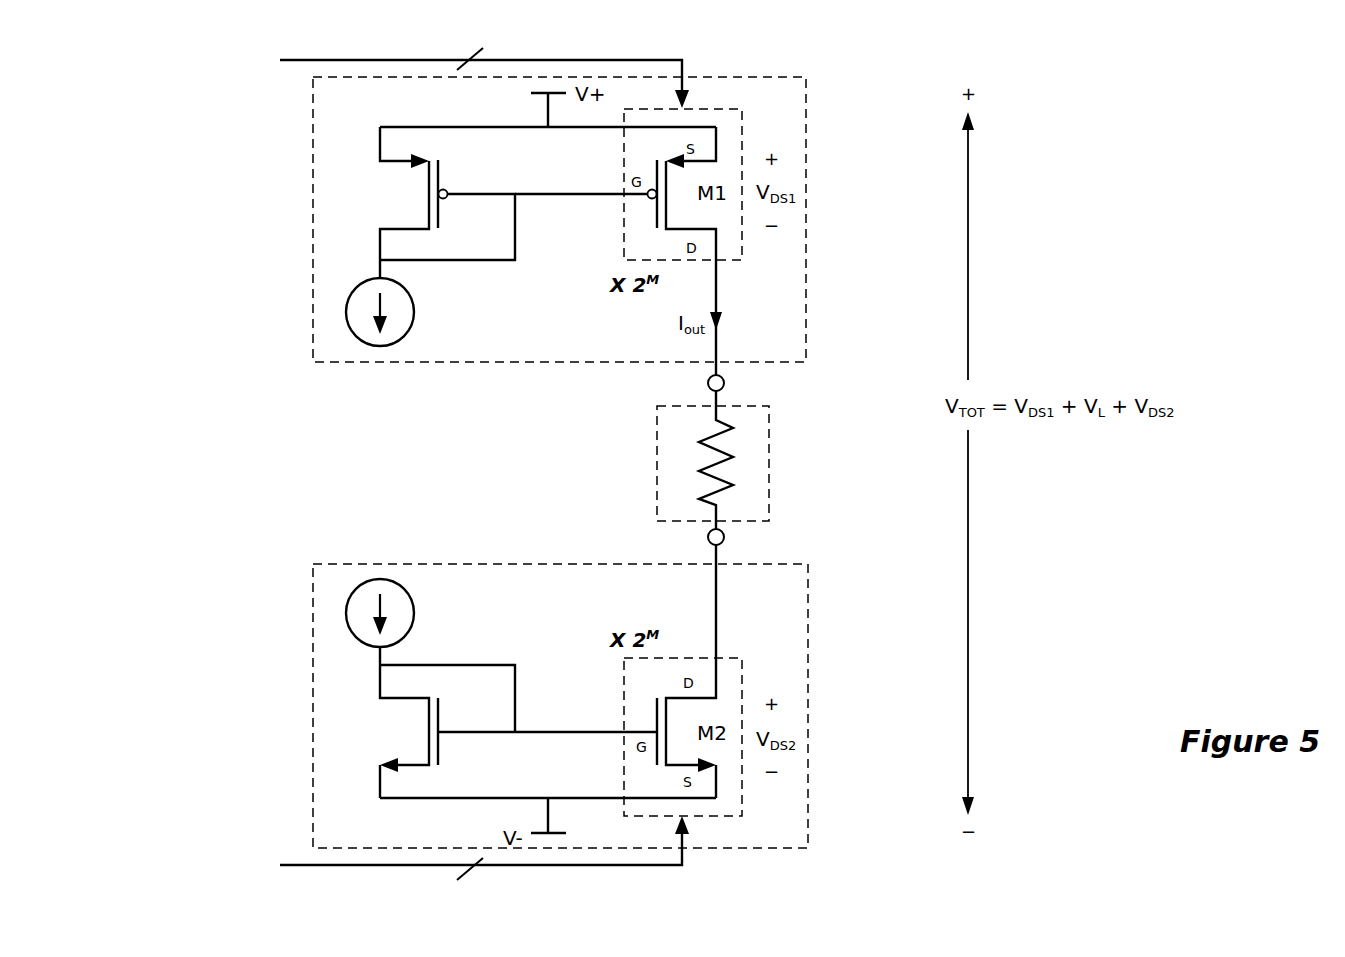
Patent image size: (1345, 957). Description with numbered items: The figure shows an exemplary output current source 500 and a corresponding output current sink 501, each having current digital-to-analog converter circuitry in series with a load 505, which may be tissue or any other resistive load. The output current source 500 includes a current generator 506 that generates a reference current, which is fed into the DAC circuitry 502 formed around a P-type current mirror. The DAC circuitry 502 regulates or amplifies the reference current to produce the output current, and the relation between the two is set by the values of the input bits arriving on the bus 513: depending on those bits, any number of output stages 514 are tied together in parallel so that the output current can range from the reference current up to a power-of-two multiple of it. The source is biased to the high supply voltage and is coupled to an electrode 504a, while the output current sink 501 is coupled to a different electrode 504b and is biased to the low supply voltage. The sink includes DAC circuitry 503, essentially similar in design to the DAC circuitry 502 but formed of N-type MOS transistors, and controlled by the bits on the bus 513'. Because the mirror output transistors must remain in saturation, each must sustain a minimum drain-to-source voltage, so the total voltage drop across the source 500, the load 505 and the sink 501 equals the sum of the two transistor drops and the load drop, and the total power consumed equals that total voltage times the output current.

The output current source 500 is at (816, 193).
The output current sink 501 is at (820, 715).
The DAC circuitry 502 is at (472, 108).
The DAC circuitry 503 is at (552, 604).
The electrode 504a is at (725, 388).
The electrode 504b is at (725, 543).
The load 505 is at (642, 472).
The current generator 506 is at (413, 330).
The bus 513 is at (466, 72).
The bus 513' is at (430, 858).
The output stage 514 is at (717, 109).